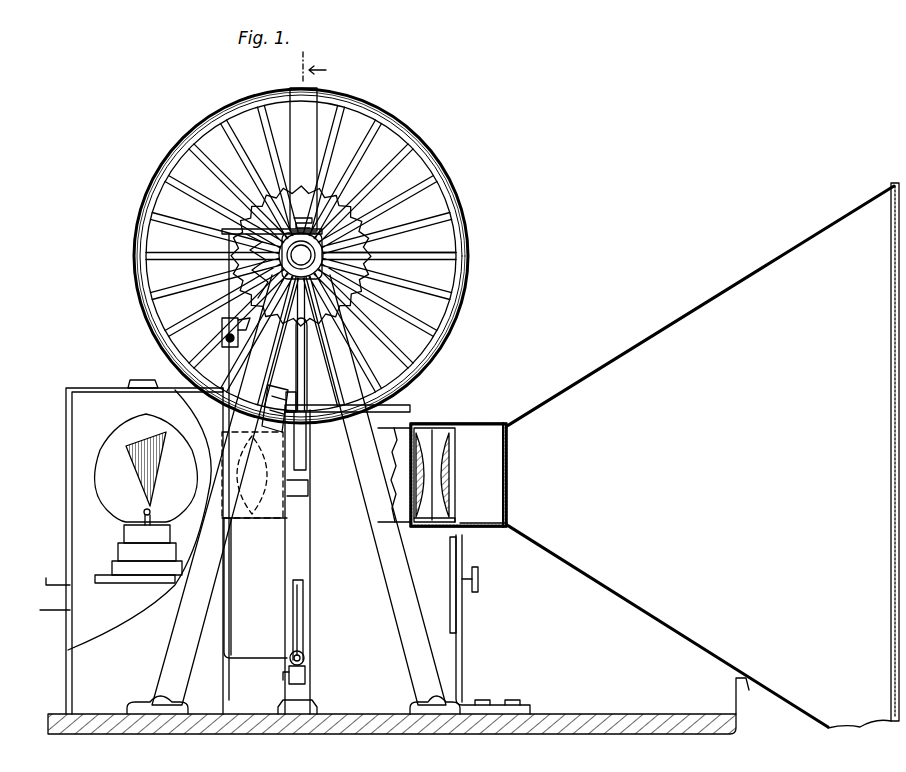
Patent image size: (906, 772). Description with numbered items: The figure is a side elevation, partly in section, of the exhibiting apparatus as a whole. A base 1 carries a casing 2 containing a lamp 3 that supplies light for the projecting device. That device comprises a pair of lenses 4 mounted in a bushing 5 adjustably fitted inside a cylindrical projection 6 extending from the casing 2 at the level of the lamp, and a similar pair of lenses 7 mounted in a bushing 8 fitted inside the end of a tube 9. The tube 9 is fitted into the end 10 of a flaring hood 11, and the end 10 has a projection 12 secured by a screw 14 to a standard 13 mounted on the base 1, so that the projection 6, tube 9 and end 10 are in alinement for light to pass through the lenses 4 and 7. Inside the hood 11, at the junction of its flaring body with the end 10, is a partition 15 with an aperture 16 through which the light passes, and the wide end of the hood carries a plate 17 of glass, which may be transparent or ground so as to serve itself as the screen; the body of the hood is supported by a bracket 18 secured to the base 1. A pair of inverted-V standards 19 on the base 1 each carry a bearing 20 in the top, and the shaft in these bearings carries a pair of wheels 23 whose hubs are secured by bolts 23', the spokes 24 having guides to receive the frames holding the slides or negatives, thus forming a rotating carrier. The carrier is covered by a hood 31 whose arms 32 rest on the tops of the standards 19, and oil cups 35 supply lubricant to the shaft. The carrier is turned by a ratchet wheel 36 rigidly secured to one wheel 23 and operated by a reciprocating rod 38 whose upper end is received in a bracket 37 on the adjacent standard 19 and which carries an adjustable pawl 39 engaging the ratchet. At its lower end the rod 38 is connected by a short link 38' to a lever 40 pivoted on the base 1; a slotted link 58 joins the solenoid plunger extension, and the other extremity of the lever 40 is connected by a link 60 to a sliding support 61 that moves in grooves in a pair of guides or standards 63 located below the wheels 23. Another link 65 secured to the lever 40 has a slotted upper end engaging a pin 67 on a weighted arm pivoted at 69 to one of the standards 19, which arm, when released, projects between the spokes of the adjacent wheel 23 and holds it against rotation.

The base 1 is at (624, 728).
The casing 2 is at (66, 524).
The lamp 3 is at (120, 436).
The pair of lenses 4 is at (274, 281).
The bushing 5 is at (252, 475).
The cylindrical projection 6 is at (258, 520).
The pair of lenses 7 is at (456, 478).
The bushing 8 is at (456, 520).
The tube 9 is at (347, 481).
The end of hood 10 is at (485, 423).
The hood 11 is at (742, 286).
The projection 12 is at (450, 565).
The standard 13 is at (463, 660).
The screw 14 is at (479, 579).
The partition 15 is at (507, 516).
The aperture 16 is at (507, 470).
The plate of glass 17 is at (891, 438).
The bracket 18 is at (734, 692).
The standards 19 is at (168, 657).
The bearing 20 is at (324, 260).
The wheels 23 is at (322, 256).
The bolts 23' is at (301, 256).
The spokes 24 is at (226, 204).
The hood 31 is at (457, 219).
The arms 32 is at (272, 161).
The oil cups 35 is at (303, 216).
The ratchet wheel 36 is at (380, 254).
The bracket 37 is at (258, 266).
The reciprocating rod 38 is at (214, 467).
The short link 38' is at (324, 649).
The pawl 39 is at (222, 326).
The lever 40 is at (305, 672).
The slotted link 58 is at (278, 384).
The link 60 is at (296, 612).
The sliding support 61 is at (304, 634).
The guides or standards 63 is at (312, 552).
The link 65 is at (308, 488).
The pin 67 is at (306, 430).
The pivot 69 is at (294, 392).